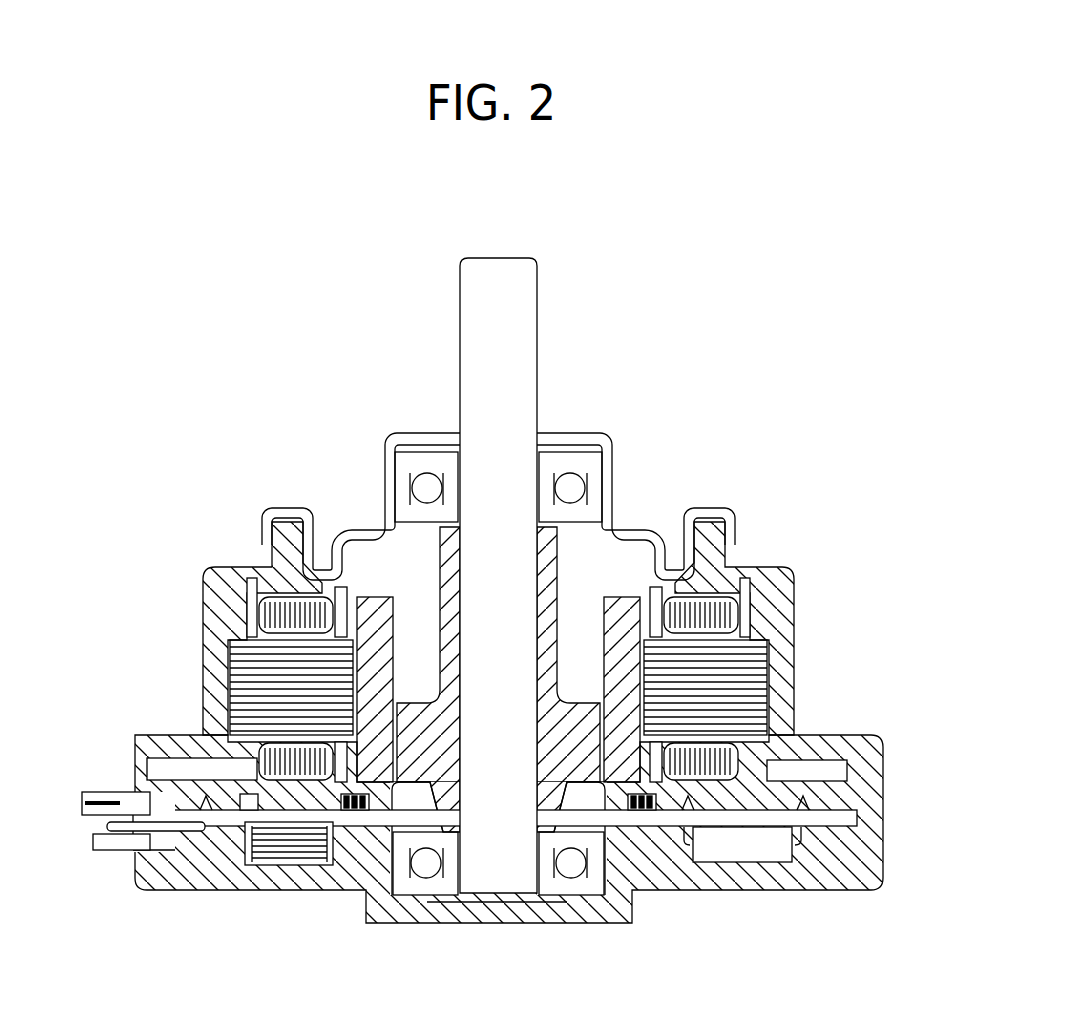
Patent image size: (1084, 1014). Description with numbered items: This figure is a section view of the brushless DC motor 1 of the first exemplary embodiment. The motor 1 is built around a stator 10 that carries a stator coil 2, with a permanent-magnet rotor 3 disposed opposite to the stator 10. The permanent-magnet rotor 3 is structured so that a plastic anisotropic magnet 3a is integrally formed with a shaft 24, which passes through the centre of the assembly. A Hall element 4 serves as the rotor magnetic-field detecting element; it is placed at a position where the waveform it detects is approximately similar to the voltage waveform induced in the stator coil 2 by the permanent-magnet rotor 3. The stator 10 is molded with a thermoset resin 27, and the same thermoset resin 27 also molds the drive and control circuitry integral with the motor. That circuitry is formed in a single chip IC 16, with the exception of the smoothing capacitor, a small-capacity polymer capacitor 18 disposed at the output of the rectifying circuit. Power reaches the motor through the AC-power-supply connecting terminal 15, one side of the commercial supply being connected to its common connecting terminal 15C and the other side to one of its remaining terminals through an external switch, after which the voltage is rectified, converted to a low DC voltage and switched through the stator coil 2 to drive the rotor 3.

The brushless DC motor 1 is at (215, 578).
The stator coil 2 is at (734, 600).
The permanent-magnet rotor 3 is at (521, 627).
The plastic anisotropic magnet 3a is at (624, 622).
The Hall element 4 is at (638, 806).
The stator 10 is at (752, 690).
The AC-power-supply connecting terminal 15 is at (130, 870).
The common connecting terminal 15C is at (130, 828).
The single chip IC 16 is at (750, 851).
The polymer capacitor 18 is at (297, 848).
The shaft 24 is at (500, 272).
The thermoset resin 27 is at (862, 863).